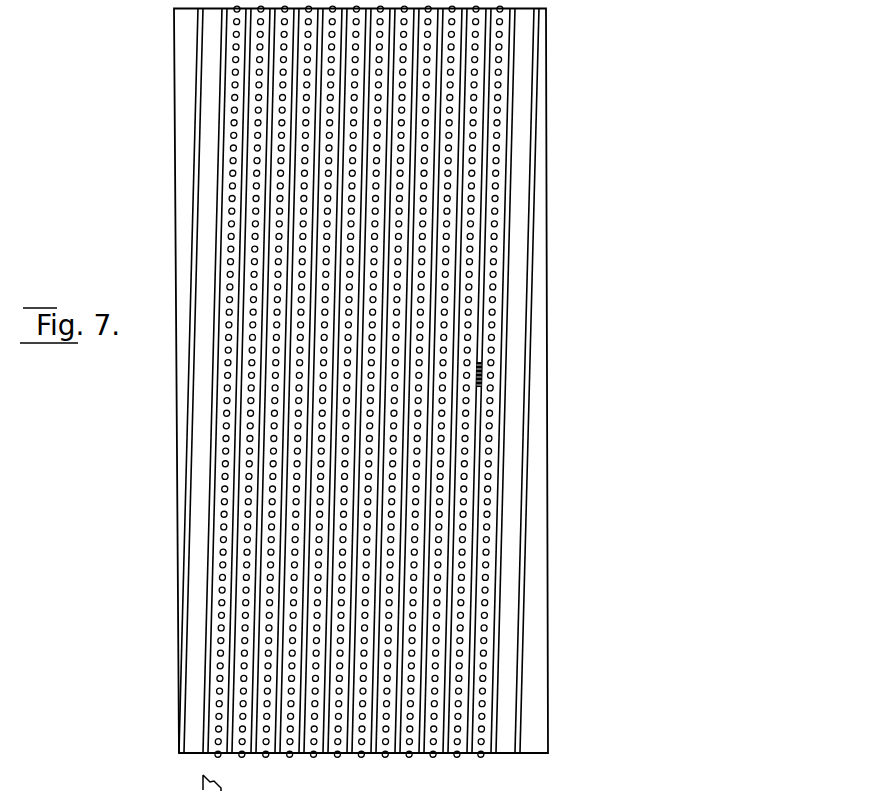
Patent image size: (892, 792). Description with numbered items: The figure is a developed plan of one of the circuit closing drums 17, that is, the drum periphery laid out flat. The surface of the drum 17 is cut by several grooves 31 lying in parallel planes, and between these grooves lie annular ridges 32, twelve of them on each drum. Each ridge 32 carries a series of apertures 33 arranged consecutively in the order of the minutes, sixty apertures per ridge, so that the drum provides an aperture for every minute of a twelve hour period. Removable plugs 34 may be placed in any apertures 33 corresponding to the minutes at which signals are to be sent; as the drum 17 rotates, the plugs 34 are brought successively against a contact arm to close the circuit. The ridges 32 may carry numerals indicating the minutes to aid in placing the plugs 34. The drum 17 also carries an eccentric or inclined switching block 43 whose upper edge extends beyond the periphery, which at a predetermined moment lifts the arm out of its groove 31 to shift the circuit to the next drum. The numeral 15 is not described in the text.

The grooves 31 is at (522, 705).
The annular ridges 32 is at (489, 747).
The apertures 33 is at (220, 552).
The removable plugs 34 is at (372, 236).
The switching block 43 is at (481, 372).
The strip members 15 is at (355, 561).
The drum 17 is at (146, 653).